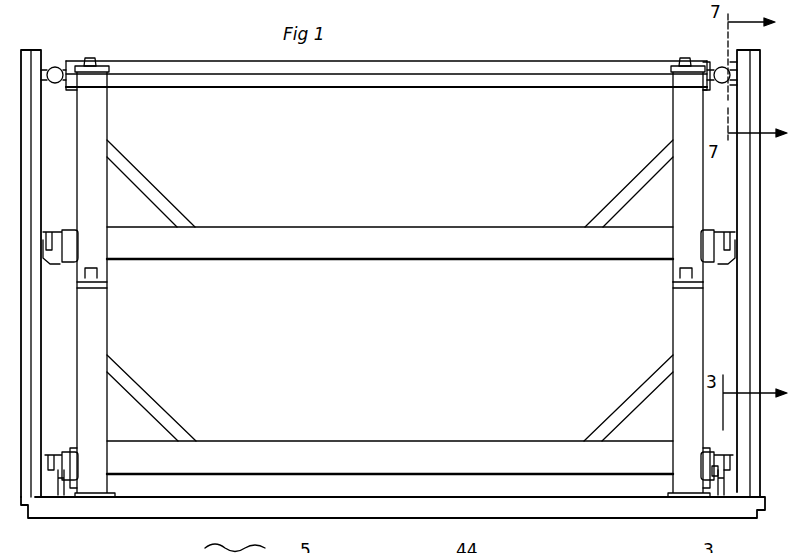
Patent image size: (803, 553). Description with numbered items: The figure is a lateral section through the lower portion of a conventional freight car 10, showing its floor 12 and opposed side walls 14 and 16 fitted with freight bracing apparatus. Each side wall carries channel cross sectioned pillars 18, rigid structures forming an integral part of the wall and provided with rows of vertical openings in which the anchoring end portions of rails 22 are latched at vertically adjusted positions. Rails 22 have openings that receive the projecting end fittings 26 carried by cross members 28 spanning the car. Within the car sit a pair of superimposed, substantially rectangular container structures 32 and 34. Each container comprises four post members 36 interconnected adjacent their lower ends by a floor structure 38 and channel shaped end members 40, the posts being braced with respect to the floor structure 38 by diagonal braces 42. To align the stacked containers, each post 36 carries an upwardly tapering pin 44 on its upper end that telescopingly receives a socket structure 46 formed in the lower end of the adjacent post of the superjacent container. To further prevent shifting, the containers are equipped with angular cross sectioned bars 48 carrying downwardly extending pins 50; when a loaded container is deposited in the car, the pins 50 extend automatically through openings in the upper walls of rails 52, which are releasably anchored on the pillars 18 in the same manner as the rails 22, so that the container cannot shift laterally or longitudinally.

The freight car 10 is at (642, 337).
The floor 12 is at (135, 505).
The side wall 14 is at (765, 292).
The side wall 16 is at (22, 372).
The pillar 18 is at (36, 172).
The rail 22 is at (733, 85).
The end fitting 26 is at (58, 66).
The cross member 28 is at (575, 87).
The container structure 32 is at (693, 357).
The container structure 34 is at (682, 205).
The post member 36 is at (103, 322).
The floor structure 38 is at (406, 248).
The end member 40 is at (85, 450).
The diagonal brace 42 is at (150, 190).
The upwardly tapering pin 44 is at (95, 60).
The socket structure 46 is at (78, 280).
The angular cross sectioned bar 48 is at (62, 454).
The pin 50 is at (60, 482).
The rail 52 is at (716, 472).